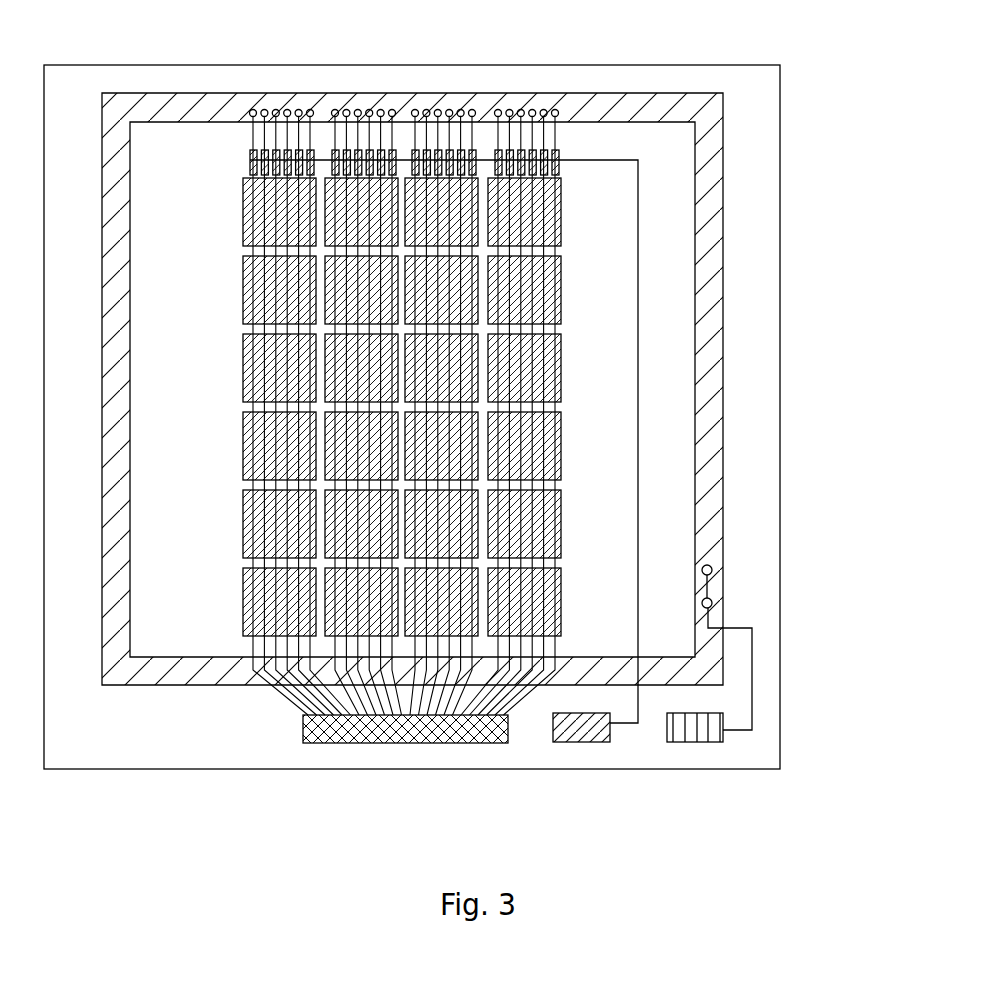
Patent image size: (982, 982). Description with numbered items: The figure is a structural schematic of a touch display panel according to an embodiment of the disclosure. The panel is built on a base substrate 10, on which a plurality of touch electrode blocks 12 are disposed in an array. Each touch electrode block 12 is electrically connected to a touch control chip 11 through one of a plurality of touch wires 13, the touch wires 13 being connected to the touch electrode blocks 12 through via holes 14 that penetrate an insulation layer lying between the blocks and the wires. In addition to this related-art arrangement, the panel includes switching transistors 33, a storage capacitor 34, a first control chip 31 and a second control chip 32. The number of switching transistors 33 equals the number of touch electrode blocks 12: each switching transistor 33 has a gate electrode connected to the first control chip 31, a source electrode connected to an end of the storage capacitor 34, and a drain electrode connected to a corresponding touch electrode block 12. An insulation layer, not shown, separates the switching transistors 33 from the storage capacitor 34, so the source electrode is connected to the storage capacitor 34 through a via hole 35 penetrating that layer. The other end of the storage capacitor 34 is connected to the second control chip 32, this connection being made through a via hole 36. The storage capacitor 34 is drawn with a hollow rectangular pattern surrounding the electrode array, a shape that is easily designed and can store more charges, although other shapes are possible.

The base substrate 10 is at (100, 770).
The touch control chip 11 is at (355, 745).
The touch electrode block 12 is at (561, 417).
The touch wire 13 is at (557, 375).
The via hole 14 is at (548, 512).
The first control chip 31 is at (580, 743).
The second control chip 32 is at (700, 743).
The switching transistor 33 is at (553, 133).
The storage capacitor 34 is at (673, 97).
The via hole 35 is at (555, 110).
The via hole 36 is at (713, 603).